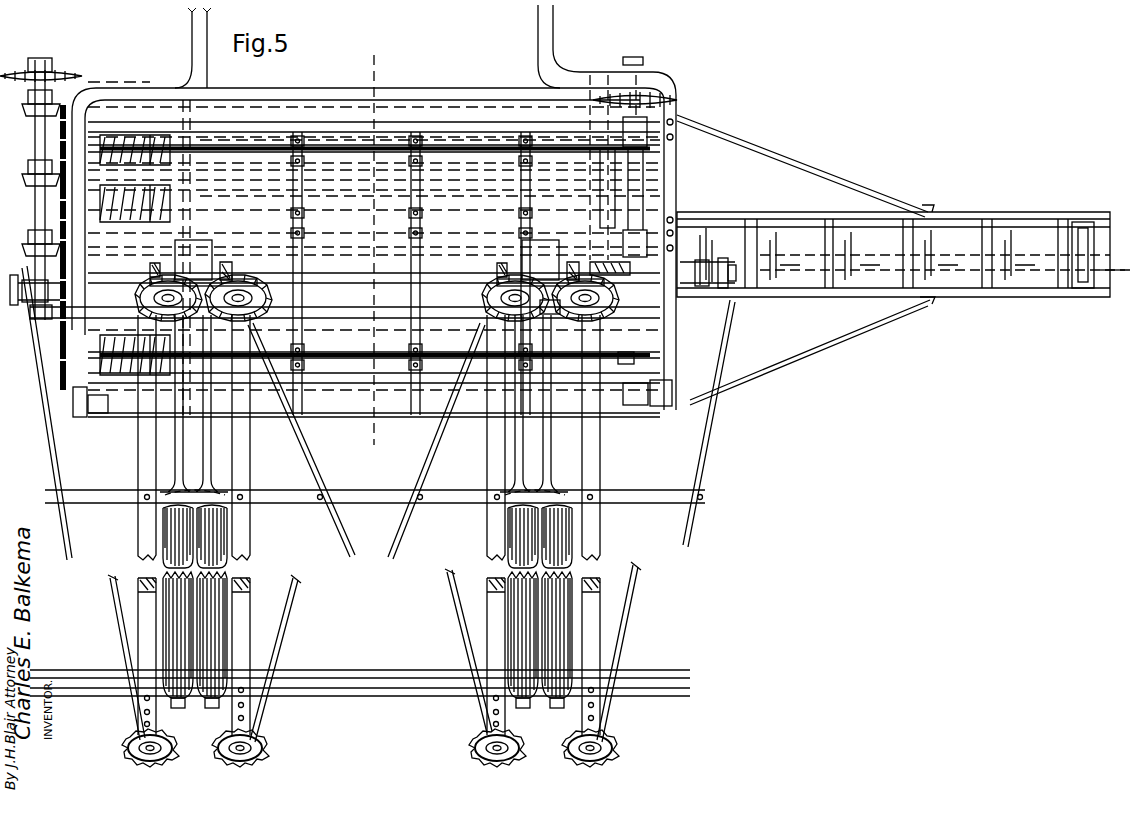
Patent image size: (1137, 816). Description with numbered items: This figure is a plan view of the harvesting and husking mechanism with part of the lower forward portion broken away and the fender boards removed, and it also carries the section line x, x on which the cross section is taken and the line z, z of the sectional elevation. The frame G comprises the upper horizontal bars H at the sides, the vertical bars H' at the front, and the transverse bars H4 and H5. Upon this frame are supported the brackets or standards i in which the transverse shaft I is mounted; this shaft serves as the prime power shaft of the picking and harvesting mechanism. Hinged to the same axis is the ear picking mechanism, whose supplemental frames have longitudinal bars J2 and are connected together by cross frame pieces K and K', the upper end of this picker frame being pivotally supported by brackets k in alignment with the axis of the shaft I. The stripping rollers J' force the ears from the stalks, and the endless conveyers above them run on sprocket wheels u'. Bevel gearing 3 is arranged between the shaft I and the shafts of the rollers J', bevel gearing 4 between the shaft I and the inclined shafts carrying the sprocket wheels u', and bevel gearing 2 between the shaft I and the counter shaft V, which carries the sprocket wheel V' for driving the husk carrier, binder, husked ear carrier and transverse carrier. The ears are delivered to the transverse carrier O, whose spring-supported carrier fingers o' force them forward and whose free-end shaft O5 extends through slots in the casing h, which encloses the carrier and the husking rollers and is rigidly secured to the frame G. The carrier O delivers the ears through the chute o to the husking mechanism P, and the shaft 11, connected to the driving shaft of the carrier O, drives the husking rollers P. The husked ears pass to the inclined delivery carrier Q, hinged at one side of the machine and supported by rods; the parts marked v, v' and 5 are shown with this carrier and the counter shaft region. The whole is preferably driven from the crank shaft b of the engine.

The frame G is at (363, 193).
The upper horizontal bars H is at (373, 228).
The vertical bars H' is at (369, 413).
The transverse bar H4 is at (349, 273).
The transverse bar H5 is at (350, 417).
The casing h is at (290, 88).
The section line x is at (374, 249).
The counter shaft V is at (643, 167).
The sprocket wheel V' is at (643, 75).
The brace v is at (803, 260).
The brace bracket v' is at (923, 257).
The inclined delivery carrier Q is at (788, 212).
The section line z is at (1115, 276).
The brackets k is at (736, 285).
The carrier fingers o' is at (395, 262).
The transverse carrier O is at (430, 175).
The shaft O5 is at (257, 200).
The chute o is at (154, 255).
The husking mechanism P is at (142, 135).
The crank shaft b is at (88, 171).
The shaft 11 is at (38, 213).
The transverse shaft I is at (370, 283).
The cross frame piece K' is at (367, 397).
The cross frame piece K is at (360, 674).
The sprocket wheels u' is at (380, 521).
The bevel gearing 4 is at (597, 232).
The bevel gearing 3 is at (205, 262).
The bevel gearing 2 is at (610, 276).
The bearing 5 is at (548, 318).
The brackets or standards i is at (380, 251).
The longitudinal bars J2 is at (250, 538).
The stripping rollers J' is at (360, 511).